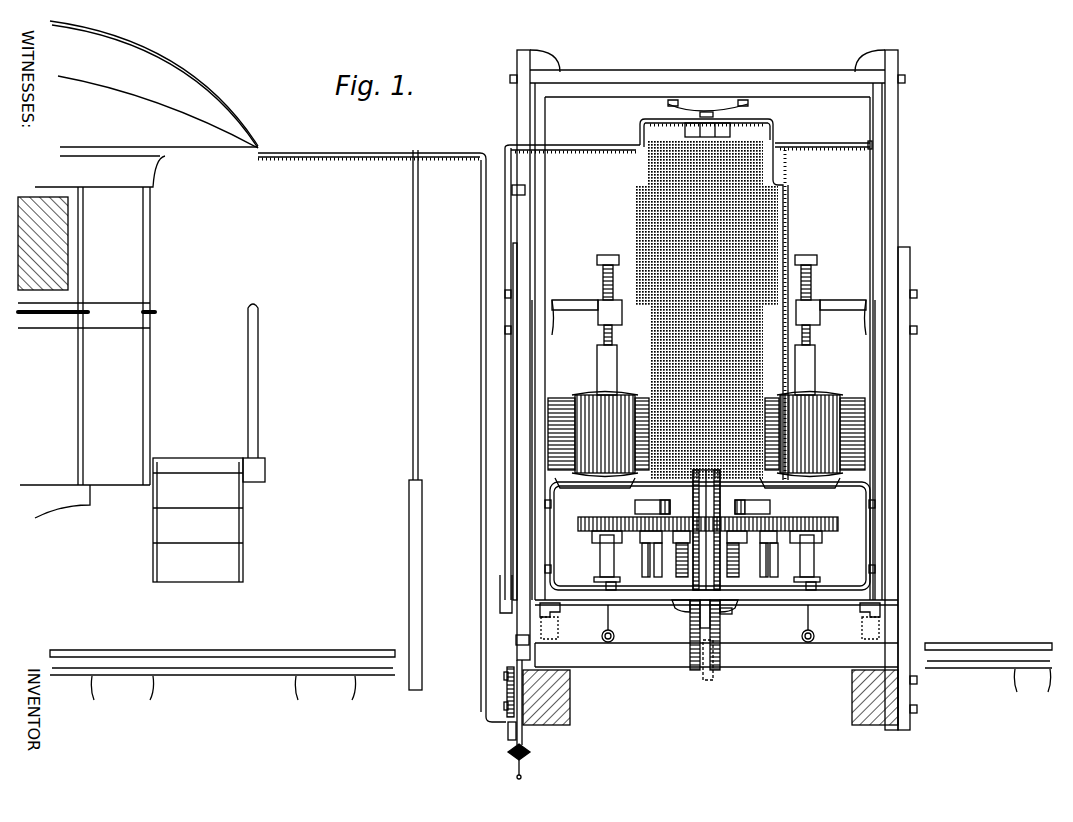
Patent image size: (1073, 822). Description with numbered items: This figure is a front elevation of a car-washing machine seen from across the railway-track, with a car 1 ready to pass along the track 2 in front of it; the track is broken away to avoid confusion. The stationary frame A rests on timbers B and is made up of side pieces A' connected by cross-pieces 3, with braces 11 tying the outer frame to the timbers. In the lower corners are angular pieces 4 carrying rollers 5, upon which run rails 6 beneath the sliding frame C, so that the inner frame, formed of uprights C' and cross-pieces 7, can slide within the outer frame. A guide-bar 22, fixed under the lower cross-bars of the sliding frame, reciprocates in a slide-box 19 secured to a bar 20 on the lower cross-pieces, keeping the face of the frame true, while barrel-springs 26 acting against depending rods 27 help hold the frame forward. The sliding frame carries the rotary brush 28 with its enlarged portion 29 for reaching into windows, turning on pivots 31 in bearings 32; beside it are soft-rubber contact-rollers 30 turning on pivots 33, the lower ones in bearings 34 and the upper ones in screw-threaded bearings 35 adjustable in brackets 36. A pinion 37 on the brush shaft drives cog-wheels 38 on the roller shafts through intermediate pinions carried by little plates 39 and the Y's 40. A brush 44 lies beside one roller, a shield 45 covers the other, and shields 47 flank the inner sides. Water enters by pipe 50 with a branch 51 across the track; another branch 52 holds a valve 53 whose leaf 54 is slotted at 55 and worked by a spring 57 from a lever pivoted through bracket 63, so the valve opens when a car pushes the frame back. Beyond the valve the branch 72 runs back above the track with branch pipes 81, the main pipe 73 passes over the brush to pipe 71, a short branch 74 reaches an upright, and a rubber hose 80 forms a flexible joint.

The car 1 is at (85, 352).
The track 2 is at (283, 655).
The cross-pieces 3 is at (700, 70).
The angular pieces 4 is at (540, 628).
The rollers 5 is at (560, 620).
The rails 6 is at (545, 610).
The cross-pieces 7 is at (812, 96).
The braces 11 is at (513, 470).
The slide-box 19 is at (690, 638).
The bar 20 is at (712, 645).
The guide-bar 22 is at (722, 618).
The barrel-springs 26 is at (608, 643).
The rods 27 is at (616, 628).
The brush 28 is at (701, 301).
The enlarged portion 29 is at (635, 210).
The contact-rollers 30 is at (583, 405).
The pivots 31 is at (752, 110).
The bearings 32 is at (708, 112).
The pivots 33 is at (604, 345).
The bearings 34 is at (600, 580).
The bearings 35 is at (603, 274).
The brackets 36 is at (562, 306).
The pinion 37 is at (693, 488).
The cog-wheels 38 is at (590, 517).
The plates 39 is at (640, 575).
The Y's 40 is at (635, 504).
The brush 44 is at (560, 398).
The guard or shield 45 is at (856, 400).
The shields 47 is at (640, 408).
The pipe 50 is at (516, 763).
The branch 51 is at (517, 772).
The branch 52 is at (523, 736).
The valve 53 is at (531, 752).
The leaf or lug 54 is at (509, 738).
The slot 55 is at (500, 727).
The spring 57 is at (508, 696).
The bracket 63 is at (514, 641).
The pipe 71 is at (554, 548).
The branch 72 is at (483, 513).
The pipe 73 is at (505, 532).
The branch 74 is at (823, 137).
The rubber hose 80 is at (464, 249).
The branch pipe 81 is at (407, 420).
The stationary frame A is at (893, 390).
The side pieces A' is at (478, 355).
The timbers B is at (852, 700).
The sliding frame C is at (741, 341).
The uprights C' is at (702, 450).